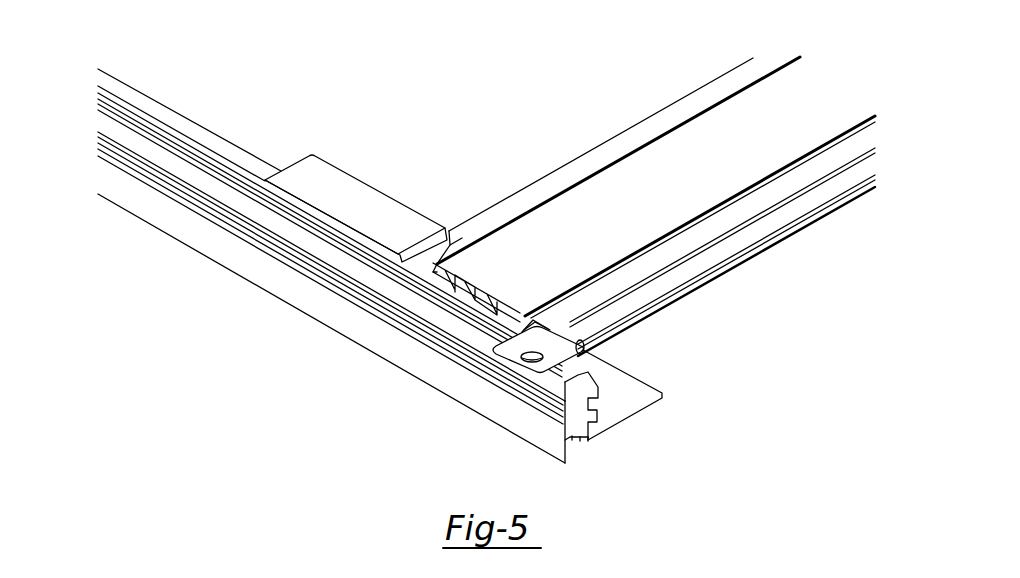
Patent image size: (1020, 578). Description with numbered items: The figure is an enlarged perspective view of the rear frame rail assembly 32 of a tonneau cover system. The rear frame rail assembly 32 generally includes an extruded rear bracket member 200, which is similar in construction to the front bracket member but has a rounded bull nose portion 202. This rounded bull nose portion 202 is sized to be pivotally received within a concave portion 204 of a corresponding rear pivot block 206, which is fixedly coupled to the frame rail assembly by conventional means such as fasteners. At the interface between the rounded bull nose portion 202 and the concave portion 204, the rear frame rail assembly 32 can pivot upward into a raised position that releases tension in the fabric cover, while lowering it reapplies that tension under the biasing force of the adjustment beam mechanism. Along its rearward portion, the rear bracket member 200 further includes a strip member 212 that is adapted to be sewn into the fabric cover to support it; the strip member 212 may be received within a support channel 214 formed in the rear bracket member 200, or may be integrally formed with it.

The rear frame rail assembly 32 is at (823, 262).
The rear bracket member 200 is at (700, 236).
The rounded bull nose portion 202 is at (538, 180).
The concave portion 204 is at (470, 242).
The rear pivot block 206 is at (347, 173).
The strip member 212 is at (627, 300).
The support channel 214 is at (797, 203).